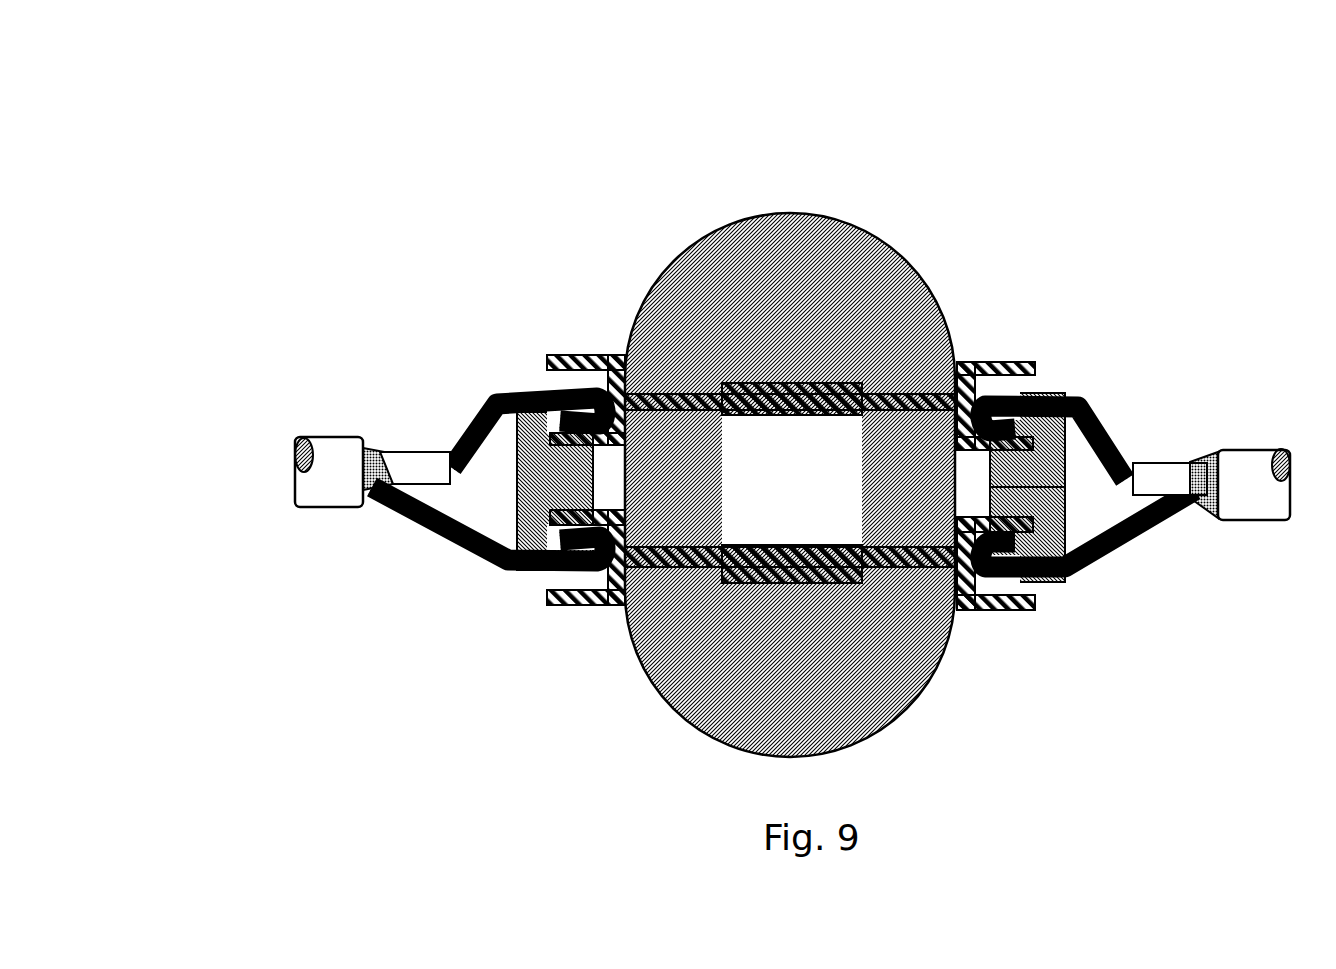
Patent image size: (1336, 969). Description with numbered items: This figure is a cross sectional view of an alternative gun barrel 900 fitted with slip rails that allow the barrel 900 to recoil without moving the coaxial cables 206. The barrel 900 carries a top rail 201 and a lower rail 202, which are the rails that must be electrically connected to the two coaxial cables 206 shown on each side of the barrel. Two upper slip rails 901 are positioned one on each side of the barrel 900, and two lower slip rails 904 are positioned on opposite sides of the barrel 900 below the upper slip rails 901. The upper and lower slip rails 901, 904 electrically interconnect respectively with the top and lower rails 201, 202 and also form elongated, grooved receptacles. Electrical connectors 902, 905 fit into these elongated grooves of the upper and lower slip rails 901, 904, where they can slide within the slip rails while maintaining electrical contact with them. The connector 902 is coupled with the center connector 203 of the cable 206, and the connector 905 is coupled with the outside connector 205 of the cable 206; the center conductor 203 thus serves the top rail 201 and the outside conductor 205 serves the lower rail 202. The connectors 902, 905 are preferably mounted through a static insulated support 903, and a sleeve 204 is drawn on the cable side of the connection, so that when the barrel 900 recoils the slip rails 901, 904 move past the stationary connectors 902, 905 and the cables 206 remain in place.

The barrel 900 is at (830, 310).
The top rail 201 is at (723, 383).
The lower rail 202 is at (782, 583).
The center cable conductor 203 is at (494, 400).
The sleeve 204 is at (418, 470).
The outside cable conductor 205 is at (413, 585).
The coaxial cable 206 is at (285, 473).
The upper slip rail 901 is at (595, 355).
The electrical connector 902 is at (1033, 392).
The static insulated support 903 is at (1067, 487).
The lower slip rail 904 is at (578, 605).
The electrical connector 905 is at (1030, 582).